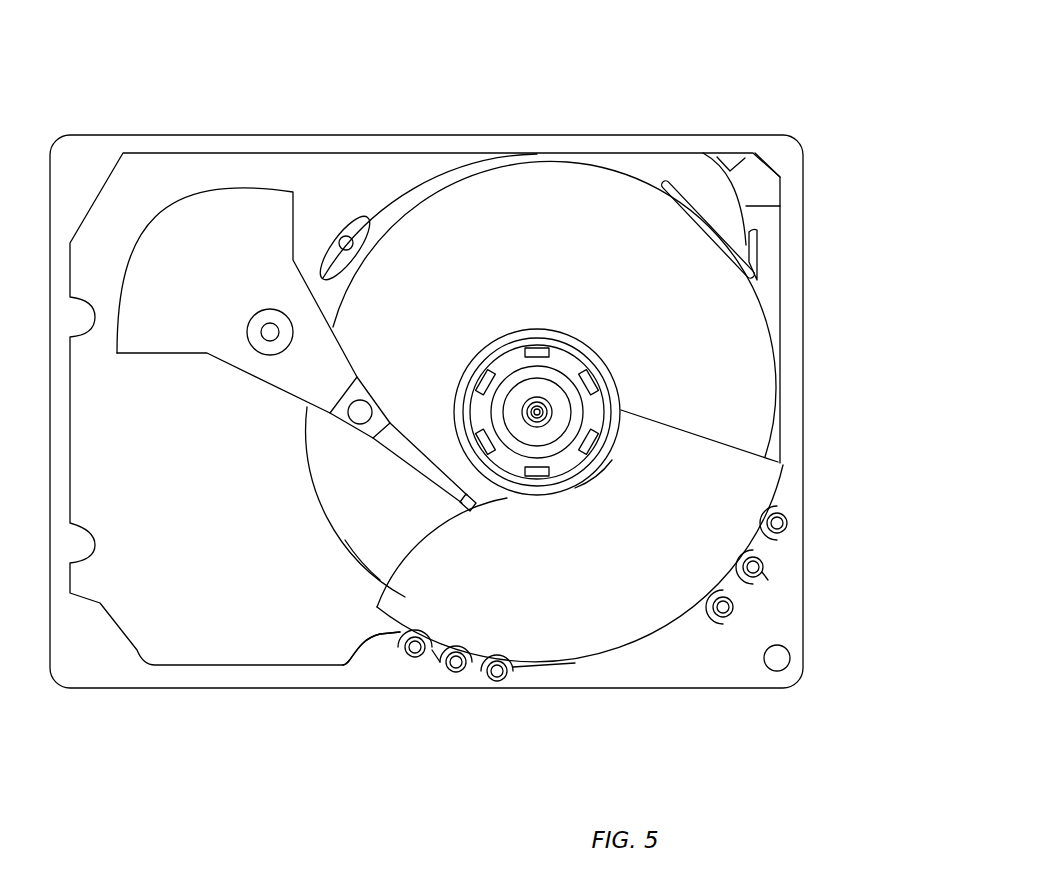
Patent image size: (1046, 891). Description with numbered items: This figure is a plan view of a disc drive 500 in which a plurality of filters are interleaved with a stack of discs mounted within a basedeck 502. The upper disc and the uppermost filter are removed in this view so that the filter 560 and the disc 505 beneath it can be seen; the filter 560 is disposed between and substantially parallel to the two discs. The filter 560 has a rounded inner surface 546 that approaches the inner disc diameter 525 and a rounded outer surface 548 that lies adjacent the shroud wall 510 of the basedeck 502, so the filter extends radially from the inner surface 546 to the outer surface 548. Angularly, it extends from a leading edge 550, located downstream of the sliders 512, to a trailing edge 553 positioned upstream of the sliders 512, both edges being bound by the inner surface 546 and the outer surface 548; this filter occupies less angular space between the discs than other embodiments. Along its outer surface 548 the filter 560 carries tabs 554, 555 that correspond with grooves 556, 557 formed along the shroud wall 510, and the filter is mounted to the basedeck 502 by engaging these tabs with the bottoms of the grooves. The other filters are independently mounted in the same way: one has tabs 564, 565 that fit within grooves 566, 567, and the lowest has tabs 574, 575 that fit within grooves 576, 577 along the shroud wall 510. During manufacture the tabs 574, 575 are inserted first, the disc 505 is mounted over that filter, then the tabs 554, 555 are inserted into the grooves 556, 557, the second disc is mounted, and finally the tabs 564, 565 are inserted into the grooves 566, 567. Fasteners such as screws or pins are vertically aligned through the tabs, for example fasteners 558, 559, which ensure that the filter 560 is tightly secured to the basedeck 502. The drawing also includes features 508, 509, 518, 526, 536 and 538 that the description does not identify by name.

The disc drive 500 is at (656, 100).
The basedeck 502 is at (792, 362).
The disc 505 is at (345, 490).
The spindle motor hub 508 is at (545, 342).
The spindle axis 509 is at (548, 410).
The shroud wall 510 is at (457, 162).
The sliders 512 is at (480, 510).
The actuator arm 518 is at (292, 373).
The inner disc diameter 525 is at (460, 365).
The disk outer edge 526 is at (362, 565).
The breather filter 536 is at (757, 263).
The recirculation filter 538 is at (748, 207).
The inner surface 546 is at (603, 472).
The outer surface 548 is at (396, 624).
The leading edge 550 is at (462, 570).
The trailing edge 553 is at (700, 445).
The tab 554 is at (440, 652).
The tab 555 is at (753, 553).
The groove 556 is at (458, 672).
The groove 557 is at (768, 576).
The fastener 558 is at (452, 668).
The fastener 559 is at (768, 573).
The filter 560 is at (720, 498).
The tab 564 is at (398, 632).
The tab 565 is at (712, 614).
The groove 566 is at (408, 658).
The groove 567 is at (737, 613).
The tab 574 is at (512, 665).
The tab 575 is at (775, 510).
The groove 576 is at (503, 680).
The groove 577 is at (790, 525).